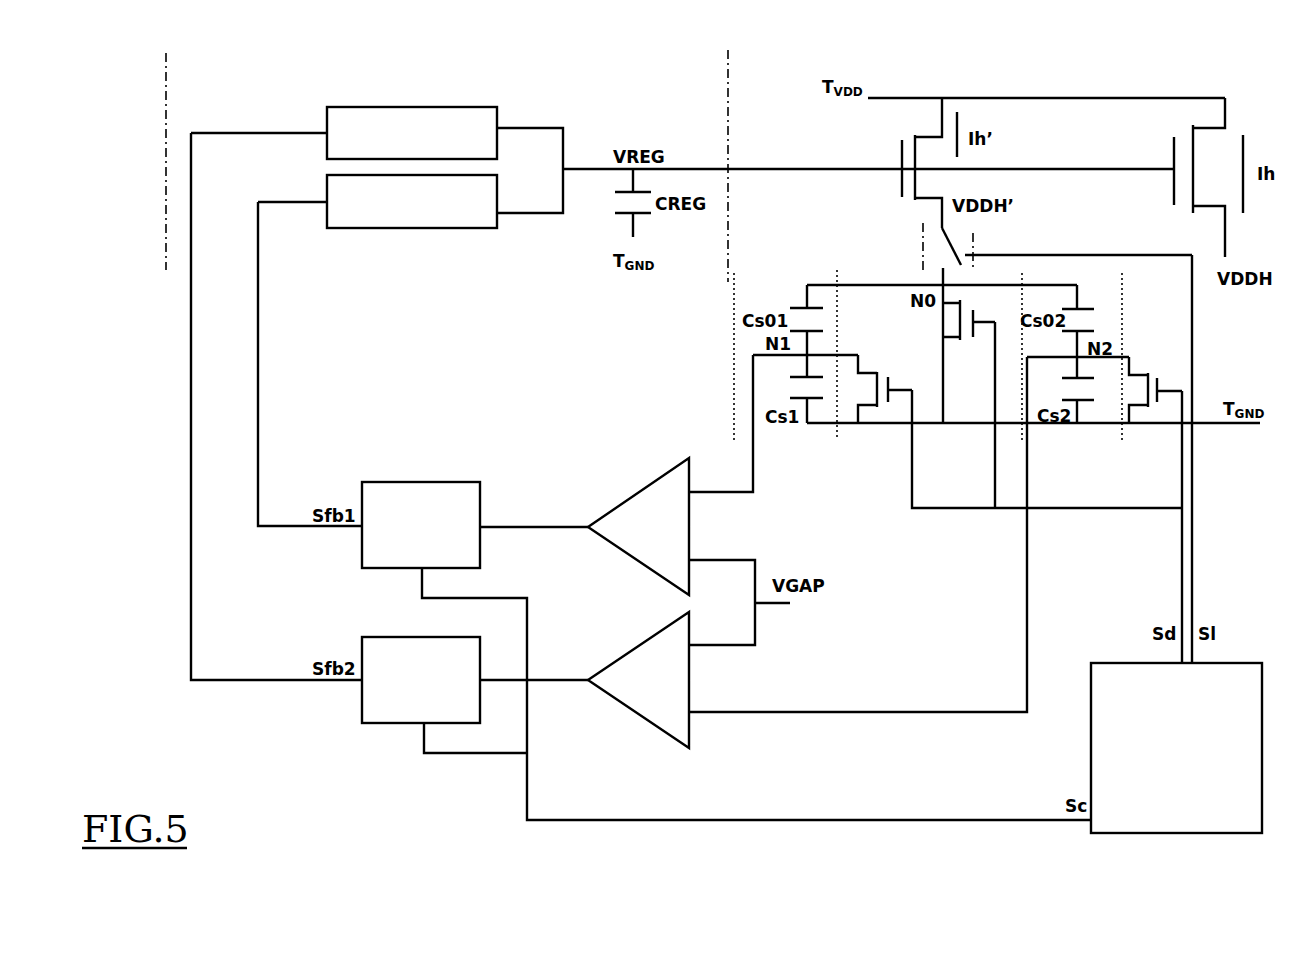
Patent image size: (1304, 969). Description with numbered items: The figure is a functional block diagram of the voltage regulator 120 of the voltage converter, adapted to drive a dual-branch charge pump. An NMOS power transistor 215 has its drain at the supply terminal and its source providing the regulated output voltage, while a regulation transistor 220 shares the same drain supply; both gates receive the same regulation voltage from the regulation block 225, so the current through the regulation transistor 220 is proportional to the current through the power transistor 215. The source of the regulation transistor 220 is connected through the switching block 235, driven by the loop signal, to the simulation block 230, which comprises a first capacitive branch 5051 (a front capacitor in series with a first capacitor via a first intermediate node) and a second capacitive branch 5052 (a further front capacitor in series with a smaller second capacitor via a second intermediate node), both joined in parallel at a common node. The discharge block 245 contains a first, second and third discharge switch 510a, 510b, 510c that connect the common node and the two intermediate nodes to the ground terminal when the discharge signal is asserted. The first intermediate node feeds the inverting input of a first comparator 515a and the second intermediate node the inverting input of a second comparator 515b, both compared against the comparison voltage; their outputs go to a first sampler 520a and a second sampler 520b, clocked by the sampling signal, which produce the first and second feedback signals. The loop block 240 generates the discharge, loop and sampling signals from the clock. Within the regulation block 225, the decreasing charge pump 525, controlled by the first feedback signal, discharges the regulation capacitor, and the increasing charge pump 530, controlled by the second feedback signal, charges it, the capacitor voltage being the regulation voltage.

The voltage regulator 120 is at (136, 479).
The power transistor 215 is at (1174, 165).
The regulation transistor 220 is at (902, 162).
The regulation block 225 is at (166, 133).
The simulation block 230 is at (465, 799).
The switching block 235 is at (922, 258).
The loop block 240 is at (1125, 663).
The discharge block 245 is at (836, 486).
The first capacitive branch 5051 is at (733, 372).
The second capacitive branch 5052 is at (1106, 272).
The first discharge switch 510a is at (953, 305).
The second discharge switch 510b is at (868, 412).
The third discharge switch 510c is at (1143, 408).
The first comparator 515a is at (660, 473).
The second comparator 515b is at (615, 657).
The first sampler 520a is at (410, 482).
The second sampler 520b is at (362, 645).
The decreasing charge pump 525 is at (327, 195).
The increasing charge pump 530 is at (327, 108).